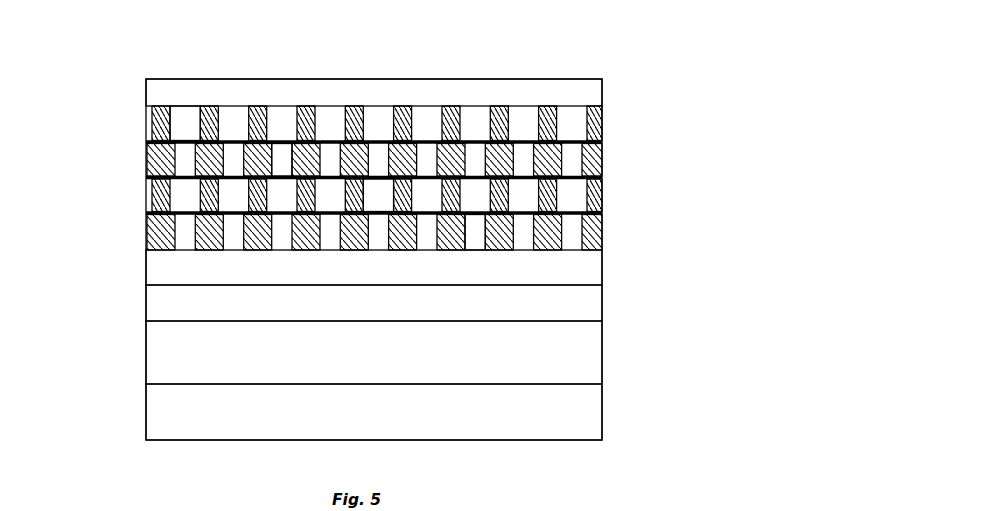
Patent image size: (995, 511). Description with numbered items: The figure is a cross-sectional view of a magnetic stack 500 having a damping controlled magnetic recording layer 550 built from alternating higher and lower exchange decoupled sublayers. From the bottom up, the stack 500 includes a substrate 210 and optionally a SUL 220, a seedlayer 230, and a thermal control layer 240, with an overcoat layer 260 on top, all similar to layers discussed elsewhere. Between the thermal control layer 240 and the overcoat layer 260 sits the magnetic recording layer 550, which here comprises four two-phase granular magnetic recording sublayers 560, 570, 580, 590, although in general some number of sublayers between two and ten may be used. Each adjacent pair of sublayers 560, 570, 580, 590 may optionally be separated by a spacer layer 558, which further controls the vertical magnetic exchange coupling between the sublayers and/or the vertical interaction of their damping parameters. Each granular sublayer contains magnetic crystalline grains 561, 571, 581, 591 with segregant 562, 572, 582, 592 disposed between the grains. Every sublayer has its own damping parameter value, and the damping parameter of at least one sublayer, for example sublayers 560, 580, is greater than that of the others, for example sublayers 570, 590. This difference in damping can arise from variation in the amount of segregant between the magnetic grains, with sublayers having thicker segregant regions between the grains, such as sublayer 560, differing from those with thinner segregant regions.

The magnetic stack 500 is at (110, 50).
The substrate 210 is at (602, 425).
The SUL 220 is at (602, 352).
The seedlayer 230 is at (595, 305).
The thermal control layer 240 is at (592, 273).
The overcoat layer 260 is at (592, 97).
The magnetic recording layer 550 is at (386, 137).
The spacer layer 558 is at (146, 178).
The granular magnetic recording sublayer 560 is at (347, 137).
The magnetic crystalline grains 561 is at (452, 228).
The segregant 562 is at (475, 228).
The granular magnetic recording sublayer 570 is at (347, 120).
The magnetic crystalline grains 571 is at (351, 190).
The segregant 572 is at (375, 190).
The granular magnetic recording sublayer 580 is at (347, 99).
The magnetic crystalline grains 581 is at (258, 152).
The segregant 582 is at (288, 158).
The granular magnetic recording sublayer 590 is at (347, 84).
The magnetic crystalline grains 591 is at (190, 120).
The segregant 592 is at (203, 120).